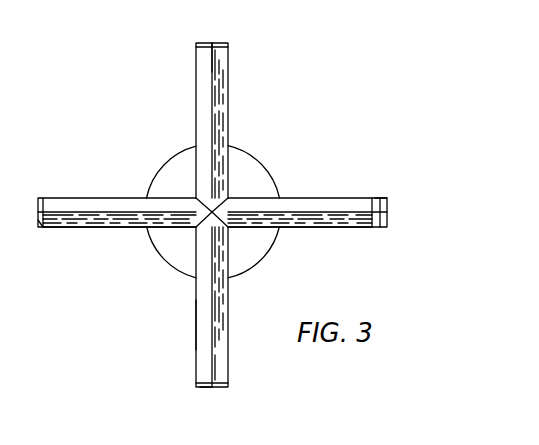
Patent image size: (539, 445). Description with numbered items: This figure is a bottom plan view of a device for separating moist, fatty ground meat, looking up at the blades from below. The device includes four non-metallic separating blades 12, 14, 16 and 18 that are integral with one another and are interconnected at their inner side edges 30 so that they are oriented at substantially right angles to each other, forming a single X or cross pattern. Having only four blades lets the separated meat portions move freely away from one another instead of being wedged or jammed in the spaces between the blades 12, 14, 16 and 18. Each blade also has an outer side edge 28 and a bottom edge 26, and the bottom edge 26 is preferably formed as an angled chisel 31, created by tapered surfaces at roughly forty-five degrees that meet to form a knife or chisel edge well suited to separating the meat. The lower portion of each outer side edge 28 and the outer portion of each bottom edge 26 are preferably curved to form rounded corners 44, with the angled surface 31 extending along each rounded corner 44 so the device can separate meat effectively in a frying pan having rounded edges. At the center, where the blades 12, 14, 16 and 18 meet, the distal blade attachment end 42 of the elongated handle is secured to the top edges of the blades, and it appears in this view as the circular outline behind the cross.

The non-metallic separating blade 12 is at (78, 196).
The non-metallic separating blade 14 is at (228, 90).
The non-metallic separating blade 16 is at (312, 197).
The non-metallic separating blade 18 is at (230, 312).
The bottom edge 26 is at (336, 218).
The side edge 28 is at (218, 43).
The inner side edge 30 is at (176, 199).
The angled chisel edge 31 is at (203, 325).
The distal blade attachment end 42 is at (243, 166).
The rounded corner 44 is at (214, 72).